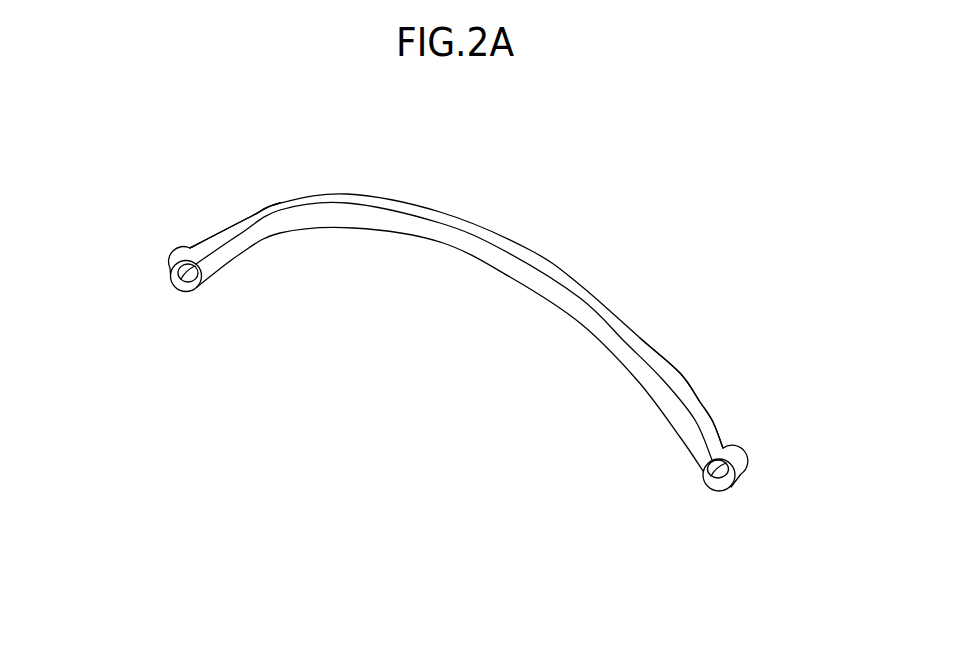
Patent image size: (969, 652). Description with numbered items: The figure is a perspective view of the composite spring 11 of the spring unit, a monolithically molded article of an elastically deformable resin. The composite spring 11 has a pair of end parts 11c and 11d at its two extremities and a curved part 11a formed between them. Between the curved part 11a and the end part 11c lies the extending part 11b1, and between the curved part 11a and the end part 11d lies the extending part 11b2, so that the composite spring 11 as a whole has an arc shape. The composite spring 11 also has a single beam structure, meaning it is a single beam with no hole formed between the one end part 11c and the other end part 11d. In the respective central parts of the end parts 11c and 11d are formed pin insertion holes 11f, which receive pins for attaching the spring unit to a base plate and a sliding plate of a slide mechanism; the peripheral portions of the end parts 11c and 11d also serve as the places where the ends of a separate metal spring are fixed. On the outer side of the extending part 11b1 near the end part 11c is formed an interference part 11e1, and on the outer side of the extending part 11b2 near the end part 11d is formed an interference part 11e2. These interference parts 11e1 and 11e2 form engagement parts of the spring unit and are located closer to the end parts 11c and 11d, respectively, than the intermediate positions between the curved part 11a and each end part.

The composite spring 11 is at (648, 138).
The curved part 11a is at (443, 220).
The extending part 11b1 is at (285, 227).
The extending part 11b2 is at (632, 362).
The end part 11c is at (172, 260).
The end part 11d is at (740, 457).
The interference part 11e1 is at (236, 222).
The interference part 11e2 is at (673, 383).
The pin insertion hole 11f is at (185, 289).